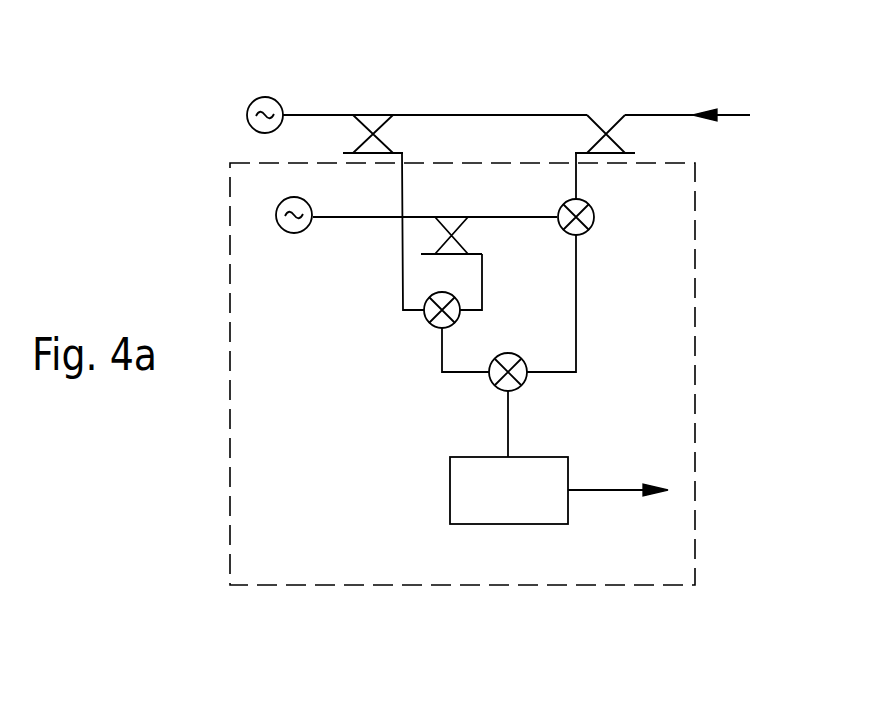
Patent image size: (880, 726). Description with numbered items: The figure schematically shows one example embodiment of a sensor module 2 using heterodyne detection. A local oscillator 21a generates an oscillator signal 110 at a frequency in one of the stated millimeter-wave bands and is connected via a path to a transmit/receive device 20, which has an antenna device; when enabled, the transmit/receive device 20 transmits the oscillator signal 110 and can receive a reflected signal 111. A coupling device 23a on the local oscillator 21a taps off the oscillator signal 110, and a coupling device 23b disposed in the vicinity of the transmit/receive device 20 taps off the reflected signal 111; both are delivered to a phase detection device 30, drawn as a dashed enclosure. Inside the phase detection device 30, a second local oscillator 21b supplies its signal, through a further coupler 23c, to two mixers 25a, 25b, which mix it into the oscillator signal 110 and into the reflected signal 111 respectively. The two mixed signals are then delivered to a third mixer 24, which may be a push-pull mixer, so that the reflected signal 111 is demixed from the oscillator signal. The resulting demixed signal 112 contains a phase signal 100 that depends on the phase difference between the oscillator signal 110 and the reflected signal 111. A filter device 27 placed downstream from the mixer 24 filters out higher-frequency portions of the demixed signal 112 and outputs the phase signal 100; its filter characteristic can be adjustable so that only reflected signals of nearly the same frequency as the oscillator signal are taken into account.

The sensor module 2 is at (183, 80).
The transmit/receive device 20 is at (707, 110).
The local oscillator 21a is at (265, 97).
The second local oscillator 21b is at (294, 233).
The coupling device 23a is at (375, 120).
The coupling device 23b is at (607, 123).
The third coupler 23c is at (452, 223).
The third mixer 24 is at (510, 352).
The mixer 25a is at (594, 217).
The mixer 25b is at (435, 327).
The filter device 27 is at (509, 490).
The phase detection device 30 is at (695, 372).
The phase signal 100 is at (610, 490).
The oscillator signal 110 is at (330, 113).
The reflected signal 111 is at (662, 113).
The demixed signal 112 is at (510, 428).